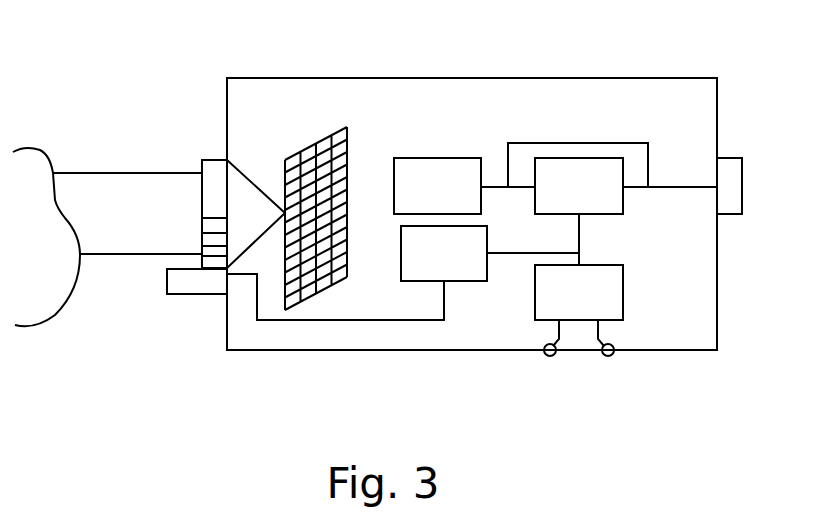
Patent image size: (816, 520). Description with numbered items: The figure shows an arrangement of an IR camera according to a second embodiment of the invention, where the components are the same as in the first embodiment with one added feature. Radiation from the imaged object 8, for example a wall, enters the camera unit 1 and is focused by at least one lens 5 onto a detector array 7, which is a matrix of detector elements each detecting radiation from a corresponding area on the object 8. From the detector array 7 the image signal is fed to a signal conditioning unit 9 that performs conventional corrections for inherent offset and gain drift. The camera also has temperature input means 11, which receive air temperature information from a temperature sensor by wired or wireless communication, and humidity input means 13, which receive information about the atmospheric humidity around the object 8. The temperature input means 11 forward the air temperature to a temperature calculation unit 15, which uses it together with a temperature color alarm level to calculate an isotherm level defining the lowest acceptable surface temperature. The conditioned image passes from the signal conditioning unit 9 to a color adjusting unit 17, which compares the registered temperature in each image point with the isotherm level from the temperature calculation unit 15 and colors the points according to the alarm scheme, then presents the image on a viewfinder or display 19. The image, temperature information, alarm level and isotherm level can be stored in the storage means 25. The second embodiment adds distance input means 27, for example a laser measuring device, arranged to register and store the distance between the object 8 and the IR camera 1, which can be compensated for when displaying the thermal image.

The camera unit 1 is at (672, 112).
The lens 5 is at (215, 172).
The detector array 7 is at (325, 135).
The object 8 is at (24, 244).
The signal conditioning unit 9 is at (429, 201).
The temperature input means 11 is at (548, 356).
The humidity input means 13 is at (610, 356).
The temperature calculation unit 15 is at (565, 306).
The color adjusting unit 17 is at (565, 201).
The display 19 is at (733, 165).
The storage means 25 is at (429, 266).
The distance input means 27 is at (205, 291).